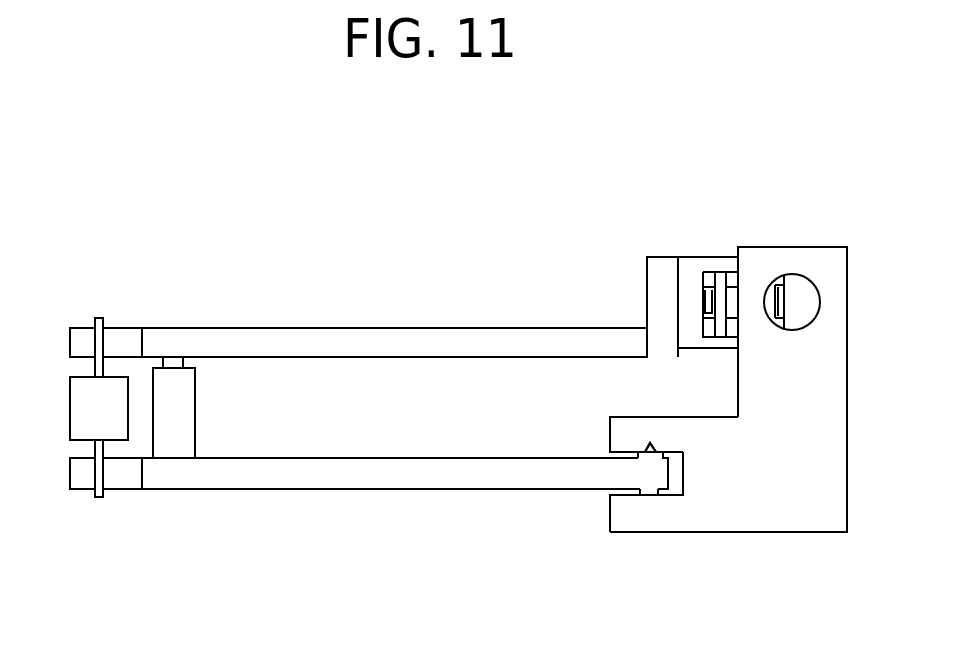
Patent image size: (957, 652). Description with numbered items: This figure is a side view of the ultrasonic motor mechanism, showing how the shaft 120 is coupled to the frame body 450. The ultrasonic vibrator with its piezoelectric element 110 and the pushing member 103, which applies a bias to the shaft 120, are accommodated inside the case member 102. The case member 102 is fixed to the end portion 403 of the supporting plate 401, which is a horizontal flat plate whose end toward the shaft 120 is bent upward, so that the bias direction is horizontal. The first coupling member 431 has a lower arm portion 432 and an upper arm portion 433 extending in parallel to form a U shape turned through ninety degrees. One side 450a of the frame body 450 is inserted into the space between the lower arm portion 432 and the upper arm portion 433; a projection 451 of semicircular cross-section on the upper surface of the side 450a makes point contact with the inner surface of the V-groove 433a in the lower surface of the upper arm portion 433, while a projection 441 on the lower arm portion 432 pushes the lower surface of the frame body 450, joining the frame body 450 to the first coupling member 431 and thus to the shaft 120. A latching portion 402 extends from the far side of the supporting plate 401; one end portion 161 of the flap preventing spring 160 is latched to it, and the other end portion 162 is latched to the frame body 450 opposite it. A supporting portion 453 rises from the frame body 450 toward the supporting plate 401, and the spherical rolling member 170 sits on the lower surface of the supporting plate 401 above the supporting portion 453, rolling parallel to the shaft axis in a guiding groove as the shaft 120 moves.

The case member 102 is at (692, 268).
The pushing member 103 is at (720, 278).
The piezoelectric element 110 is at (733, 300).
The shaft 120 is at (805, 305).
The flap preventing spring 160 is at (78, 410).
The one end portion of the flap preventing spring 161 is at (100, 317).
The other end portion of the flap preventing spring 162 is at (99, 498).
The rolling member 170 is at (173, 357).
The supporting plate 401 is at (360, 340).
The latching portion 402 is at (122, 340).
The end portion 403 is at (656, 286).
The first coupling member 431 is at (825, 423).
The lower arm portion 432 is at (640, 523).
The upper arm portion 433 is at (618, 437).
The V-groove 433a is at (657, 447).
The projection 441 is at (648, 493).
The frame body 450 is at (352, 478).
The side of the frame body 450a is at (668, 473).
The projection 451 is at (648, 449).
The supporting portion 453 is at (183, 427).